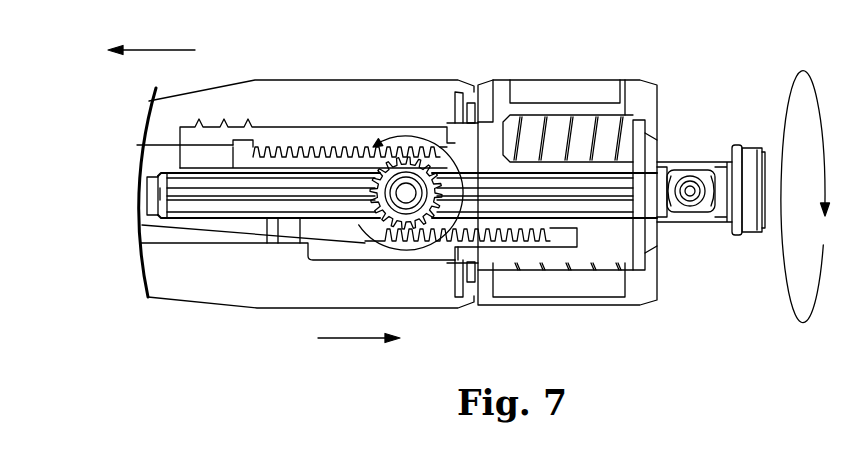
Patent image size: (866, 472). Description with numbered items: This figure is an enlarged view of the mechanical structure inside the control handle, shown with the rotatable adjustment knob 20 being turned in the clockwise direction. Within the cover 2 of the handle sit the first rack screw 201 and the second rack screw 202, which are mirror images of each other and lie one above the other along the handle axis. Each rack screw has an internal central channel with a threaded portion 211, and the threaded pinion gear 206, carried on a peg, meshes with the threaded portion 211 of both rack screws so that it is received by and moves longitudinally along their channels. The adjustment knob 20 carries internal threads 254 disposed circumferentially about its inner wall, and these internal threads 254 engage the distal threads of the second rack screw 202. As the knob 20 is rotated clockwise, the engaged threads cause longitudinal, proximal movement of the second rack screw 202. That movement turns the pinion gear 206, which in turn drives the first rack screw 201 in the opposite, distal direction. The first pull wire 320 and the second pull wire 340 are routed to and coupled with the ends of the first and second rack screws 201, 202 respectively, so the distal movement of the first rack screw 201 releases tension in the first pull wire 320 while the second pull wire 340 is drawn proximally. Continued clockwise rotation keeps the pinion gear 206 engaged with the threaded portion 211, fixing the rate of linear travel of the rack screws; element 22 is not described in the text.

The cover 2 is at (310, 75).
The rotatable adjustment knob 20 is at (560, 74).
The drive knob 22 is at (725, 150).
The first rack screw 201 is at (228, 145).
The second rack screw 202 is at (568, 233).
The second pinion gear 206 is at (427, 148).
The threaded portion 211 is at (346, 140).
The internal threads 254 is at (602, 130).
The first pull wire 320 is at (158, 160).
The second pull wire 340 is at (200, 237).